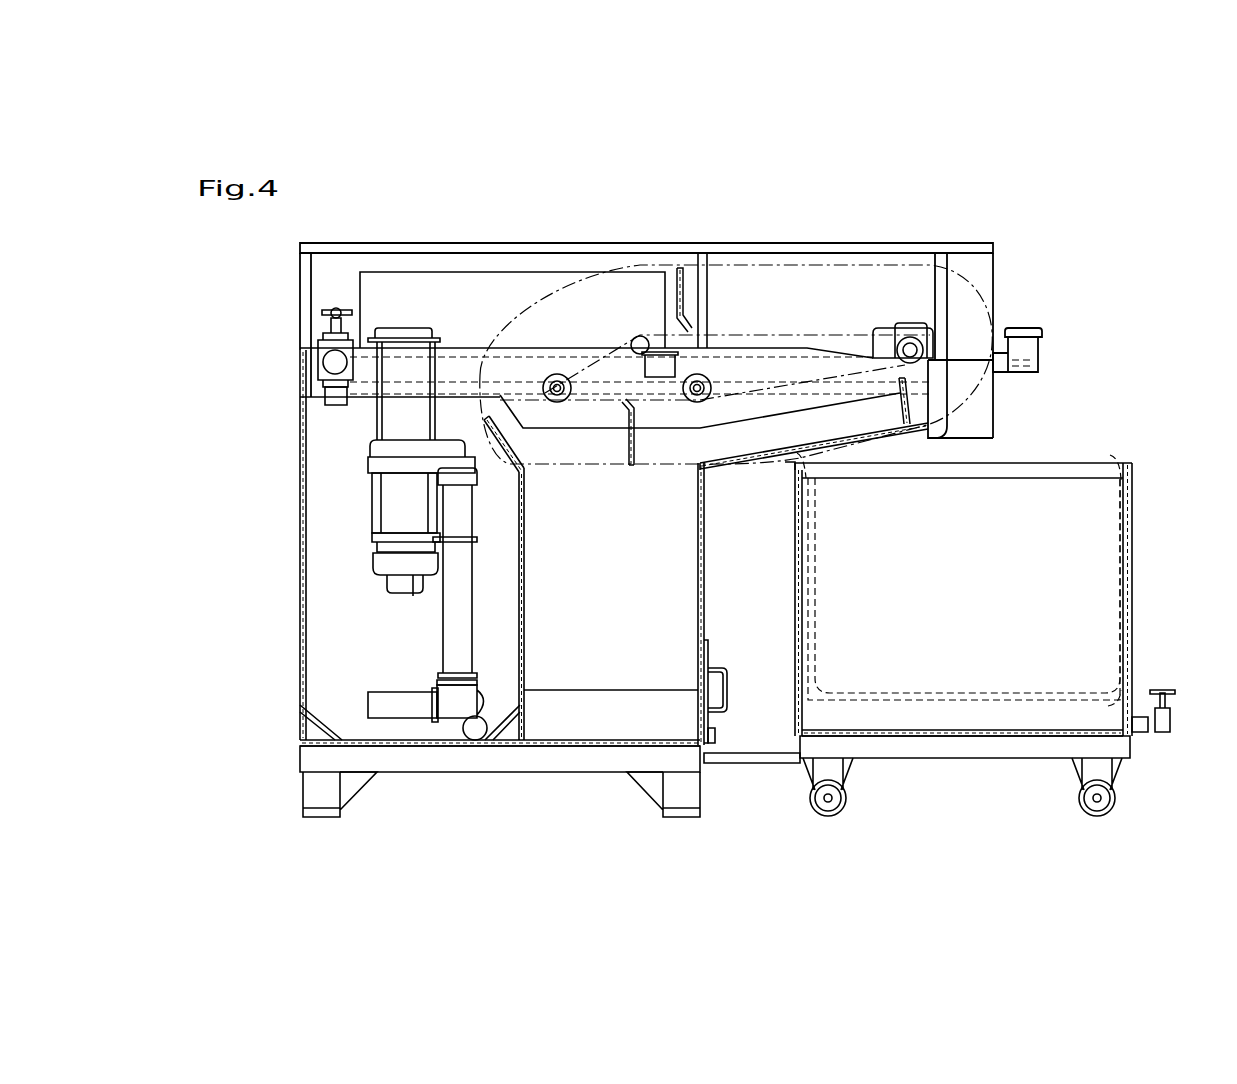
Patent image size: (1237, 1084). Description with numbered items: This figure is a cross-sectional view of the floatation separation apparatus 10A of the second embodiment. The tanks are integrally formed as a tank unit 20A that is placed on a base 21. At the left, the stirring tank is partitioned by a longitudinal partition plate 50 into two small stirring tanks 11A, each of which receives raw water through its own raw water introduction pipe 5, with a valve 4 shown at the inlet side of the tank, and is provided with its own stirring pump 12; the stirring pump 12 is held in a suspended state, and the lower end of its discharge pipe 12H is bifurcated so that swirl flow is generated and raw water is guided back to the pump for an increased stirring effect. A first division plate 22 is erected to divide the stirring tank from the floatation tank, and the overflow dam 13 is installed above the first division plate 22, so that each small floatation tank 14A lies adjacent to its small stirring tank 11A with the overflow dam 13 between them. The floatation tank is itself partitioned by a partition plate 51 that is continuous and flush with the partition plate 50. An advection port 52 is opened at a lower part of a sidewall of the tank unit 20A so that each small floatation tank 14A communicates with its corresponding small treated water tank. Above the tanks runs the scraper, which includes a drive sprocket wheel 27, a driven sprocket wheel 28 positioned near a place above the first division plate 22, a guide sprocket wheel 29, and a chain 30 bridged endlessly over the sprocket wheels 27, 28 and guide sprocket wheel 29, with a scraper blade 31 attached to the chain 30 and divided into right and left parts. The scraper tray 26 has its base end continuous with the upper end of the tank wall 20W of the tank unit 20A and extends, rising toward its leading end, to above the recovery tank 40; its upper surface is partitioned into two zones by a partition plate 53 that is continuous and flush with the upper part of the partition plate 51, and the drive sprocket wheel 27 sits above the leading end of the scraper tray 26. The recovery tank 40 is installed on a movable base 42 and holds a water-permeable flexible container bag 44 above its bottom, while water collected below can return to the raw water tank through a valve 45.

The floatation separation apparatus 10A is at (868, 212).
The chain 30 is at (745, 330).
The partition plate 53 is at (748, 442).
The scraper blade 31 is at (684, 282).
The driven sprocket wheel 28 is at (554, 374).
The guide sprocket wheel 29 is at (640, 336).
The drive sprocket wheel 27 is at (908, 337).
The valve 4 is at (322, 313).
The raw water introduction pipe 5 is at (333, 405).
The stirring pump 12 is at (396, 495).
The discharge pipe 12H is at (447, 636).
The partition plate 50 is at (310, 563).
The small stirring tank 11A is at (310, 620).
The first division plate 22 is at (526, 575).
The overflow dam 13 is at (497, 450).
The scraper tray 26 is at (766, 463).
The partition plate 51 is at (699, 532).
The tank wall 20W is at (705, 580).
The small floatation tank 14A is at (703, 616).
The advection port 52 is at (610, 703).
The tank unit 20A is at (556, 736).
The base 21 is at (444, 766).
The recovery tank 40 is at (1134, 597).
The flexible container bag 44 is at (1118, 493).
The movable base 42 is at (928, 746).
The valve 45 is at (1163, 732).